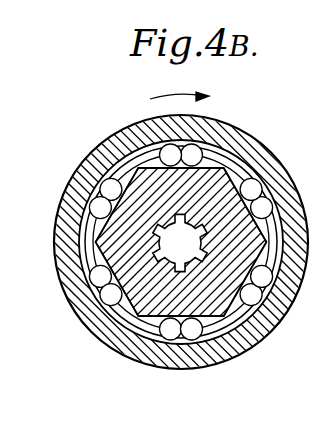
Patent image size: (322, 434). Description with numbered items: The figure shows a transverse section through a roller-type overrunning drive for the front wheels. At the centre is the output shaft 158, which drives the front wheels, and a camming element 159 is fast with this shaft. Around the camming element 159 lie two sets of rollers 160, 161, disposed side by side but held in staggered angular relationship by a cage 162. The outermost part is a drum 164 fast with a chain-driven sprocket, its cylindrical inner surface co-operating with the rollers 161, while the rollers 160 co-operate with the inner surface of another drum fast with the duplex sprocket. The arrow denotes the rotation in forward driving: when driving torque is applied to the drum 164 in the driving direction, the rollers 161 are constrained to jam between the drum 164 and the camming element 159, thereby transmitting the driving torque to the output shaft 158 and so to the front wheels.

The output shaft 158 is at (158, 239).
The camming element 159 is at (118, 309).
The rollers 160 is at (167, 338).
The rollers 161 is at (170, 335).
The cage 162 is at (228, 168).
The drum 164 is at (107, 143).